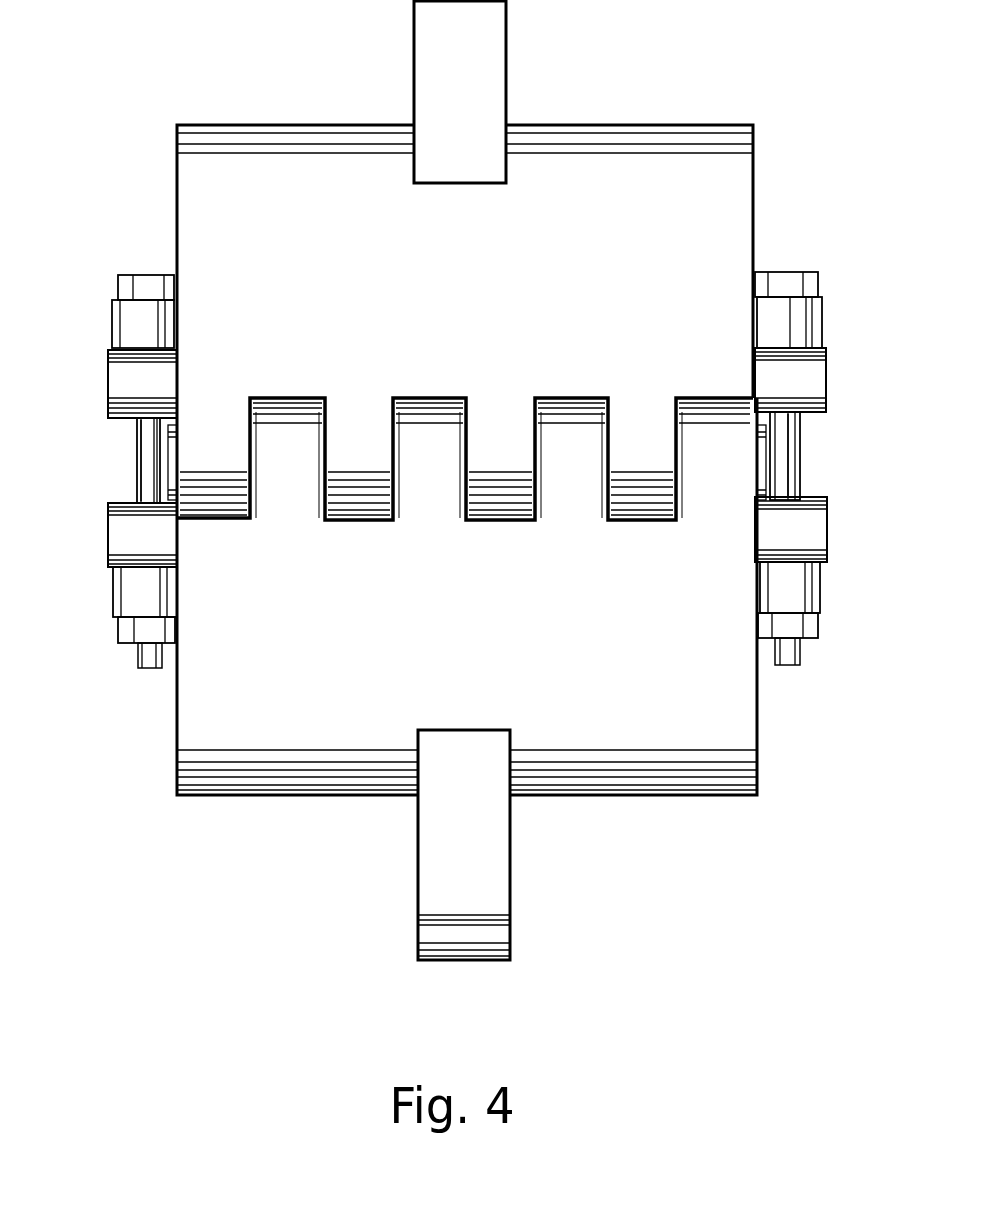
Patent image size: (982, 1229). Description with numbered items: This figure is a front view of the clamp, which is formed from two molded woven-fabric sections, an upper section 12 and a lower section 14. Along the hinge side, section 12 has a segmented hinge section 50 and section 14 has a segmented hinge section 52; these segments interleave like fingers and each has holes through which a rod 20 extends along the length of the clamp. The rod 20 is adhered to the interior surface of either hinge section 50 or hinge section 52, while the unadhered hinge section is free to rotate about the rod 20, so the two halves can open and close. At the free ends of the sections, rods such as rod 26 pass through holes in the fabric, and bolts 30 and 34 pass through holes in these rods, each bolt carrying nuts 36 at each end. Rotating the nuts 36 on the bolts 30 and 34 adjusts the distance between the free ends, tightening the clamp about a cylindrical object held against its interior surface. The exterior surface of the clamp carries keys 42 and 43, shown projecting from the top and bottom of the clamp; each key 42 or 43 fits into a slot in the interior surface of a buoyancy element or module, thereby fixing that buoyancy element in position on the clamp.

The molded section 12 is at (743, 218).
The molded section 14 is at (740, 697).
The rod 20 is at (172, 458).
The rod 26 is at (120, 322).
The bolt 30 is at (785, 440).
The bolt 34 is at (147, 452).
The nut 36 is at (150, 282).
The key 42 is at (488, 52).
The key 43 is at (500, 848).
The segmented hinge section 50 is at (633, 402).
The segmented hinge section 52 is at (291, 511).